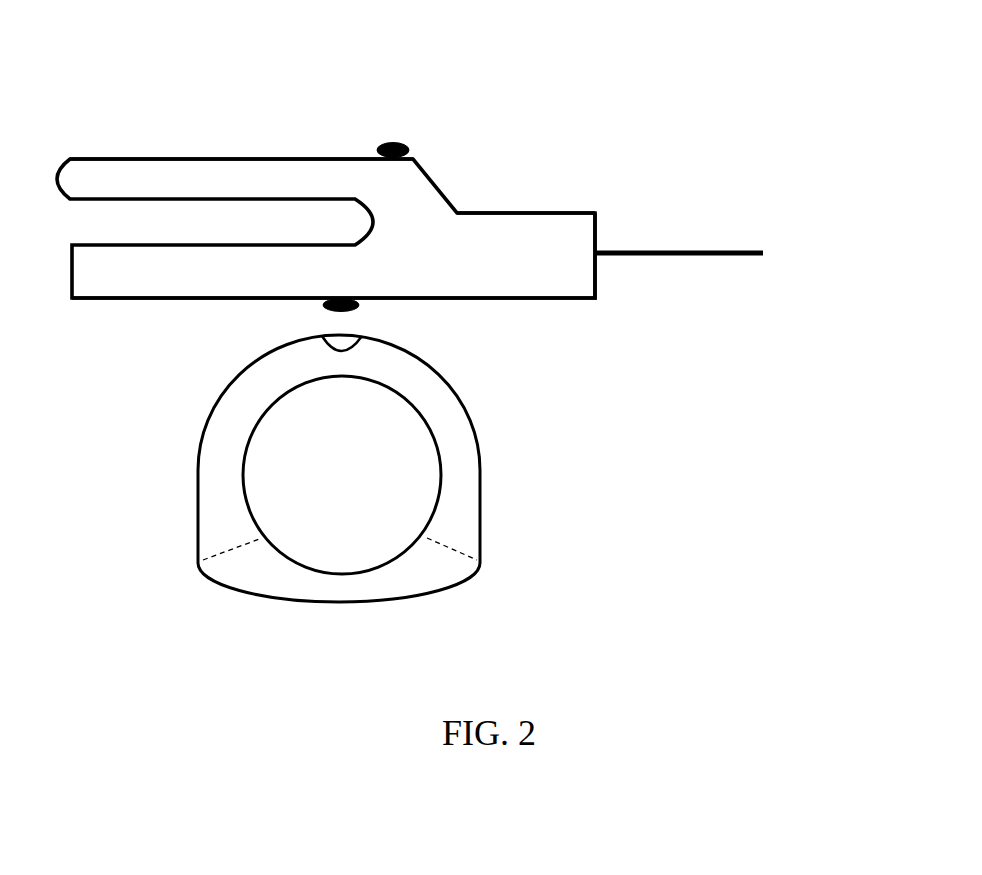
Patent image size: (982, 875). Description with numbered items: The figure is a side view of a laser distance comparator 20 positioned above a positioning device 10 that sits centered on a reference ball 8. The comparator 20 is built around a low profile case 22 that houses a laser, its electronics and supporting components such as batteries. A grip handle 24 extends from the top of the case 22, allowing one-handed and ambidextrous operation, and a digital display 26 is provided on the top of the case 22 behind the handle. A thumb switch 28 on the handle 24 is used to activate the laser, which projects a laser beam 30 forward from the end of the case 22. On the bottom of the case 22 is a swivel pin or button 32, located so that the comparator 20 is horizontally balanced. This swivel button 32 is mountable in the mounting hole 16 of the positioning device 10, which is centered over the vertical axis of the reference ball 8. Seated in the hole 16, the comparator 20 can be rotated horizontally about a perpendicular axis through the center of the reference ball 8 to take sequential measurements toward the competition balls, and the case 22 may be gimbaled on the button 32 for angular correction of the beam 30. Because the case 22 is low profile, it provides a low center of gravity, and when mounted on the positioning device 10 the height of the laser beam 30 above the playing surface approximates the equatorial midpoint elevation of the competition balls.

The reference ball 8 is at (433, 437).
The positioning device 10 is at (481, 472).
The mounting hole 16 is at (332, 345).
The laser distance comparator 20 is at (267, 105).
The low profile case 22 is at (558, 277).
The grip handle 24 is at (200, 158).
The digital display 26 is at (537, 213).
The thumb switch 28 is at (388, 143).
The laser beam 30 is at (702, 251).
The swivel button 32 is at (357, 308).